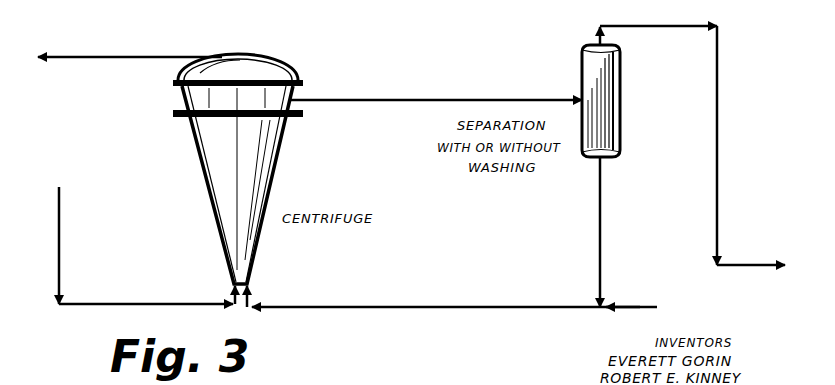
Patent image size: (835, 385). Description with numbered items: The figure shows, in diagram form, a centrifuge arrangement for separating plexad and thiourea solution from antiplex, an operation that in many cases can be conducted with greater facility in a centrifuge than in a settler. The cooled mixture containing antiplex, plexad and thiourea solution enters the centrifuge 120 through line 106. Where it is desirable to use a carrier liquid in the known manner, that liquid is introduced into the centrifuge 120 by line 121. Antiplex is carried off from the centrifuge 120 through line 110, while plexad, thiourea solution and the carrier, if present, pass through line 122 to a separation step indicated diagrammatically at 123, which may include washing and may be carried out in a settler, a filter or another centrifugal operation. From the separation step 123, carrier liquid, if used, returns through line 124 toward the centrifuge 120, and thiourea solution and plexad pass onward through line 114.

The line 106 is at (144, 303).
The line 110 is at (122, 56).
The line 114 is at (716, 167).
The centrifuge 120 is at (206, 177).
The line 121 is at (430, 303).
The line 122 is at (381, 96).
The separation step 123 is at (620, 107).
The line 124 is at (598, 228).